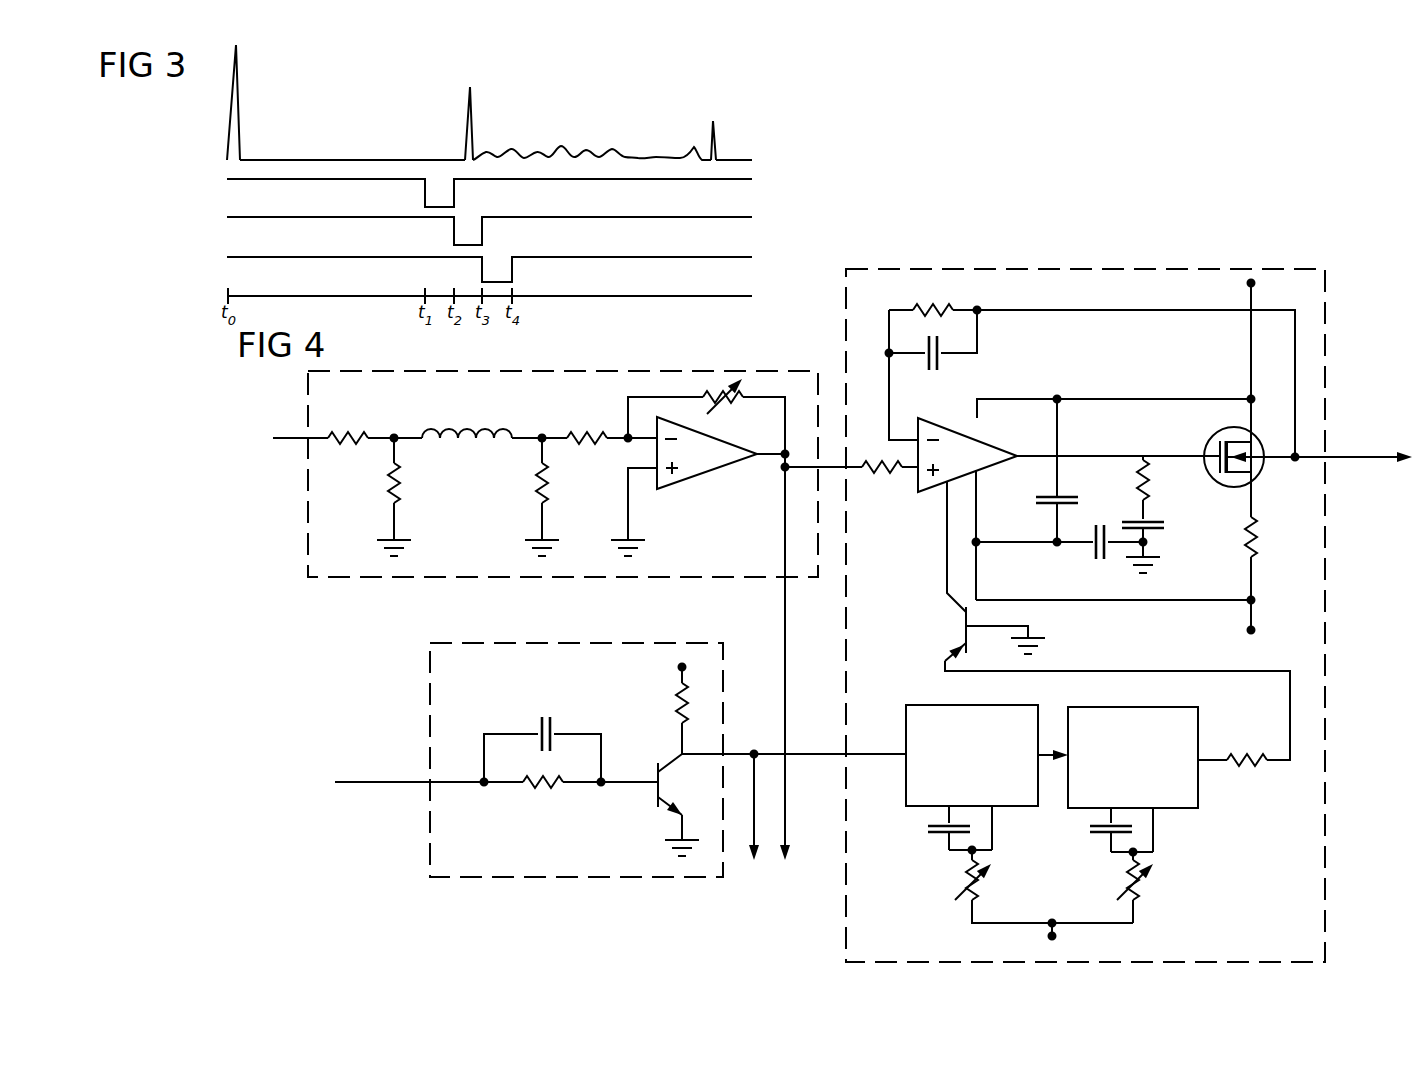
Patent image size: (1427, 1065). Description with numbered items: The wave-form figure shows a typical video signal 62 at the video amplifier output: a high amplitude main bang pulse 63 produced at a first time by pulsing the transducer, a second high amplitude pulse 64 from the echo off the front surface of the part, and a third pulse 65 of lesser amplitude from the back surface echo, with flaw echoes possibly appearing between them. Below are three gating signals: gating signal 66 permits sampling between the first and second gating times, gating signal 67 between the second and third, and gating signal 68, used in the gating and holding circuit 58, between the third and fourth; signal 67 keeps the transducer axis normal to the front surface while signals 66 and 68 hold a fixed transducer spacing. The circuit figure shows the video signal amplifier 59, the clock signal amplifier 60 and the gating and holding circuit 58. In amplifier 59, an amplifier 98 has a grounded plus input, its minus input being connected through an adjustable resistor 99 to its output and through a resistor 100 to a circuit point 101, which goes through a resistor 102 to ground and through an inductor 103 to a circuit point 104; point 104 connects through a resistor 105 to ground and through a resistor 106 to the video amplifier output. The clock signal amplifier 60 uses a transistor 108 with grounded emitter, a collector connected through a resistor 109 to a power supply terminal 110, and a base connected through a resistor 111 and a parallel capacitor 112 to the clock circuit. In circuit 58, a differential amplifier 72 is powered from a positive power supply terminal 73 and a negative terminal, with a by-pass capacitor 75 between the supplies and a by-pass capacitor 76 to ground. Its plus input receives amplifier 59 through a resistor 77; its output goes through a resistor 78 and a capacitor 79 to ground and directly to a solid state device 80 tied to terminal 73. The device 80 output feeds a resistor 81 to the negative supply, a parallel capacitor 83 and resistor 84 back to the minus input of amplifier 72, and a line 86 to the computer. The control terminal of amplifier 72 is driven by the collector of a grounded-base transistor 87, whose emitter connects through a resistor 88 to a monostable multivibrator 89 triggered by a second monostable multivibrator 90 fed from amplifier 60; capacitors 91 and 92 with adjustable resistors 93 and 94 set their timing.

In FIG. 4, the gating and holding circuit 58 is at (1286, 265).
In FIG. 4, the video signal amplifier 59 is at (364, 581).
In FIG. 4, the clock signal amplifier 60 is at (497, 637).
In FIG. 3, the video signal wave form 62 is at (757, 157).
In FIG. 3, the main bang pulse 63 is at (241, 102).
In FIG. 3, the front surface pulse 64 is at (473, 106).
In FIG. 3, the back surface pulse 65 is at (717, 136).
In FIG. 3, the gating signal 66 is at (752, 180).
In FIG. 3, the gating signal 67 is at (752, 219).
In FIG. 3, the gating signal 68 is at (752, 258).
In FIG. 4, the differential amplifier 72 is at (985, 449).
In FIG. 4, the positive power supply terminal 73 is at (1256, 284).
In FIG. 4, the by-pass capacitor 75 is at (1080, 502).
In FIG. 4, the by-pass capacitor 76 is at (1092, 552).
In FIG. 4, the resistor 77 is at (874, 474).
In FIG. 4, the resistor 78 is at (1141, 488).
In FIG. 4, the capacitor 79 is at (1167, 525).
In FIG. 4, the solid state device 80 is at (1214, 446).
In FIG. 4, the resistor 81 is at (1258, 534).
In FIG. 4, the capacitor 83 is at (942, 360).
In FIG. 4, the resistor 84 is at (936, 306).
In FIG. 4, the line 86 is at (1300, 461).
In FIG. 4, the transistor 87 is at (960, 633).
In FIG. 4, the resistor 88 is at (1250, 766).
In FIG. 4, the monostable multivibrator 89 is at (1190, 707).
In FIG. 4, the second monostable multivibrator 90 is at (1028, 705).
In FIG. 4, the capacitor 91 is at (1093, 829).
In FIG. 4, the capacitor 92 is at (930, 829).
In FIG. 4, the adjustable resistor 93 is at (1144, 896).
In FIG. 4, the adjustable resistor 94 is at (982, 895).
In FIG. 4, the amplifier 98 is at (705, 466).
In FIG. 4, the adjustable resistor 99 is at (725, 398).
In FIG. 4, the resistor 100 is at (571, 426).
In FIG. 4, the circuit point 101 is at (544, 441).
In FIG. 4, the resistor 102 is at (537, 488).
In FIG. 4, the inductor 103 is at (462, 427).
In FIG. 4, the circuit point 104 is at (397, 435).
In FIG. 4, the resistor 105 is at (388, 475).
In FIG. 4, the resistor 106 is at (339, 430).
In FIG. 4, the transistor 108 is at (656, 785).
In FIG. 4, the resistor 109 is at (678, 702).
In FIG. 4, the power supply terminal 110 is at (679, 668).
In FIG. 4, the resistor 111 is at (541, 789).
In FIG. 4, the capacitor 112 is at (540, 722).